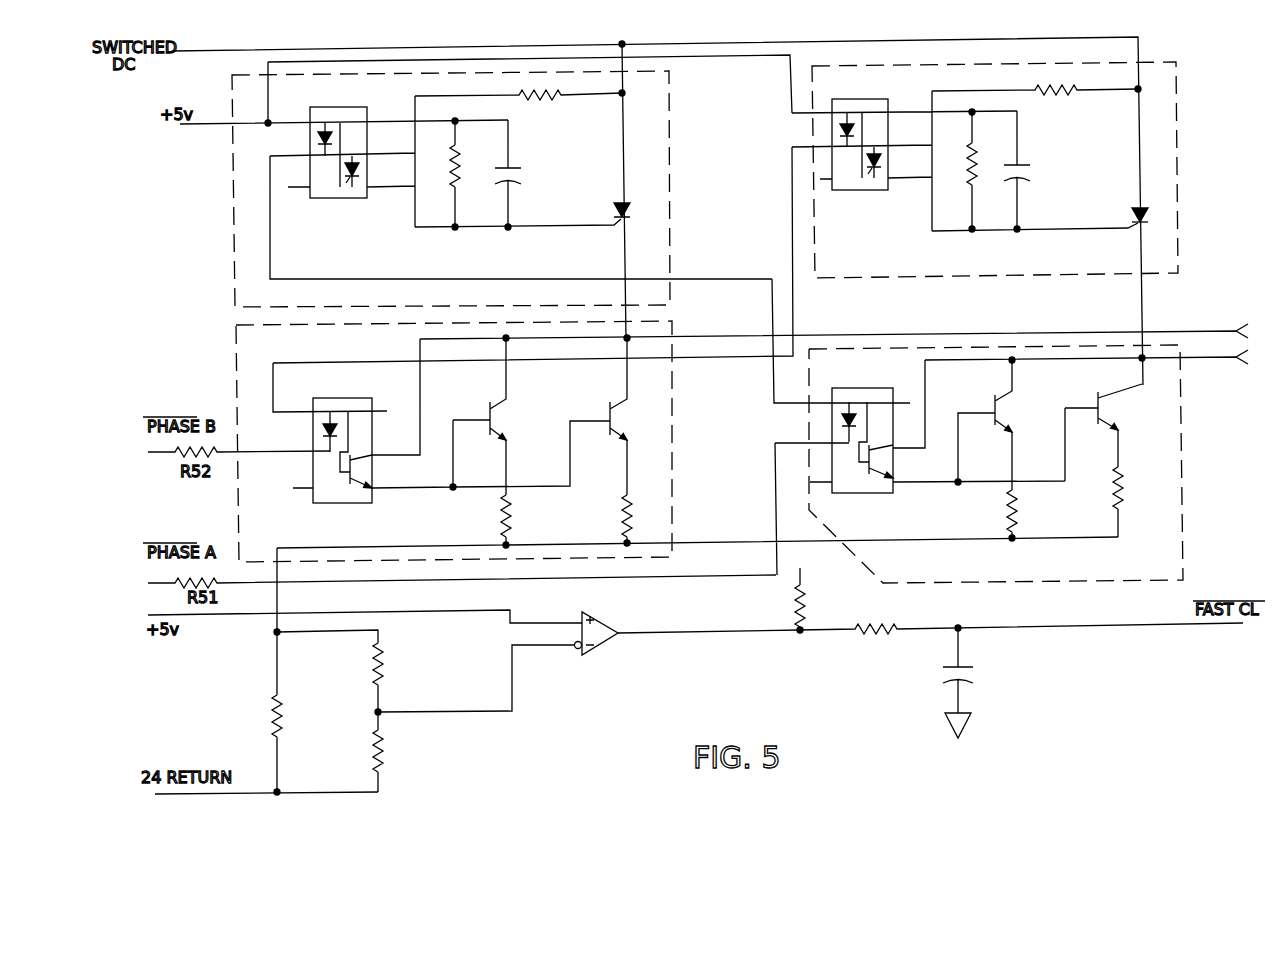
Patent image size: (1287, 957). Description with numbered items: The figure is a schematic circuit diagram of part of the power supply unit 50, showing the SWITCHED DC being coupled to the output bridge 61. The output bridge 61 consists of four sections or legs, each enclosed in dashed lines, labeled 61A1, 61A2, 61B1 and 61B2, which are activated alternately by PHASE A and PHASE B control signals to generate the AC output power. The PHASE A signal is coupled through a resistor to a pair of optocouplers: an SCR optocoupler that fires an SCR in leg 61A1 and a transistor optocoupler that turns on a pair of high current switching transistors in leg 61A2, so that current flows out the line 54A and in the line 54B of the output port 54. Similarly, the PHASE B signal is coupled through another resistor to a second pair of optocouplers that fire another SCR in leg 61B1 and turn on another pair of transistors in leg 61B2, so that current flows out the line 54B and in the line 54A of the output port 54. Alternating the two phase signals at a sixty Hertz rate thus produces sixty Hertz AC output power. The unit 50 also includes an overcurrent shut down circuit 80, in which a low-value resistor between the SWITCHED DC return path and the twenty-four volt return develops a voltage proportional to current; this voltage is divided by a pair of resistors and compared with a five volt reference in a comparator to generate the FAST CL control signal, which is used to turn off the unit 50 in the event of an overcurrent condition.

The unit 50 is at (1212, 170).
The output port 54 is at (834, 363).
The line 54A is at (1227, 329).
The line 54B is at (1217, 359).
The output bridge 61 is at (695, 316).
The leg 61A1 is at (669, 192).
The leg 61A2 is at (1185, 458).
The leg 61B1 is at (1160, 60).
The leg 61B2 is at (673, 436).
The overcurrent shut down circuit 80 is at (581, 690).